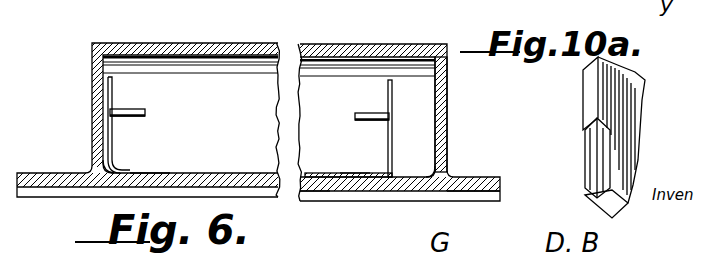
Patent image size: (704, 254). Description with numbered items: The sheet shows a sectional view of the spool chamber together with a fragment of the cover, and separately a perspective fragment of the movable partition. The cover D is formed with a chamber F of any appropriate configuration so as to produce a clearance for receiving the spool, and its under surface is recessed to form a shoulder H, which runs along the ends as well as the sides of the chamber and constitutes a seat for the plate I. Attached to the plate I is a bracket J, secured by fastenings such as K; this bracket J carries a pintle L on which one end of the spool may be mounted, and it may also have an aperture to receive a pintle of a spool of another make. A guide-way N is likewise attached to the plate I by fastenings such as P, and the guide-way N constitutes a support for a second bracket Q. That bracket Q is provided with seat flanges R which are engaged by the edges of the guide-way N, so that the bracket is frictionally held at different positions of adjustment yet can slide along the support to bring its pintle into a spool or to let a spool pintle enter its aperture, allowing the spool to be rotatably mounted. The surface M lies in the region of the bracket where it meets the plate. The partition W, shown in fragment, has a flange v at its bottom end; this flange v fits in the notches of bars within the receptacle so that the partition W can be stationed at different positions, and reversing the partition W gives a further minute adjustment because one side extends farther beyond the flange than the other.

In FIG. 6, the bracket J is at (116, 128).
In FIG. 6, the pintle L is at (141, 110).
In FIG. 6, the fillet M is at (110, 170).
In FIG. 6, the fastenings K is at (152, 174).
In FIG. 6, the bracket Q is at (393, 126).
In FIG. 6, the plate I is at (365, 113).
In FIG. 6, the guide-way N is at (313, 176).
In FIG. 6, the seat flanges R is at (353, 176).
In FIG. 6, the fastenings P is at (311, 192).
In FIG. 6, the chamber F is at (450, 97).
In FIG. 6, the shoulder H is at (449, 176).
In FIG. 6, the cover D is at (472, 193).
In FIG. 10a, the partition W is at (627, 130).
In FIG. 10a, the flange v is at (585, 181).